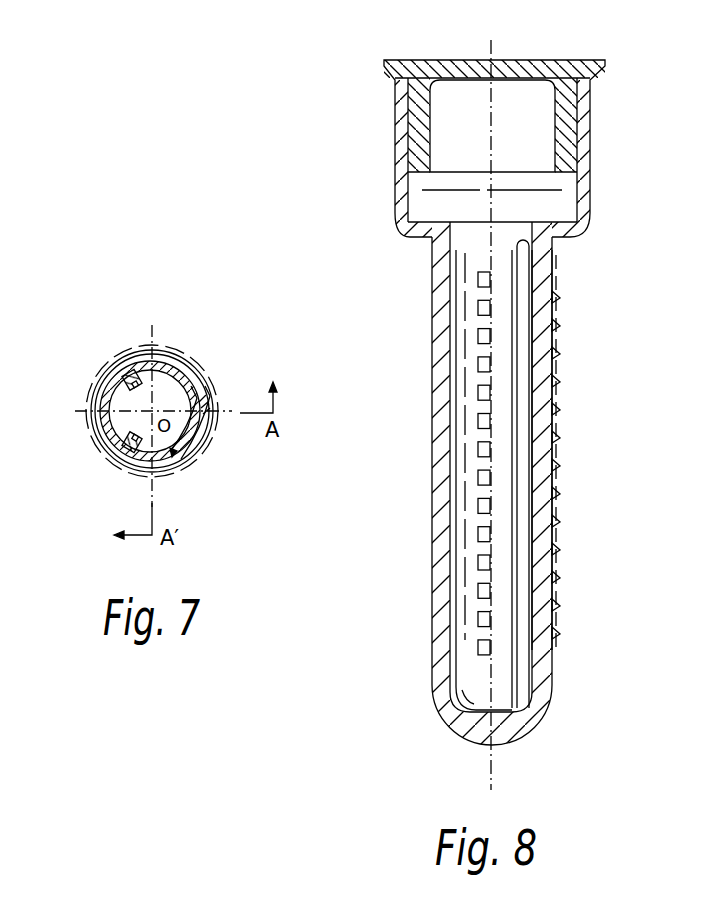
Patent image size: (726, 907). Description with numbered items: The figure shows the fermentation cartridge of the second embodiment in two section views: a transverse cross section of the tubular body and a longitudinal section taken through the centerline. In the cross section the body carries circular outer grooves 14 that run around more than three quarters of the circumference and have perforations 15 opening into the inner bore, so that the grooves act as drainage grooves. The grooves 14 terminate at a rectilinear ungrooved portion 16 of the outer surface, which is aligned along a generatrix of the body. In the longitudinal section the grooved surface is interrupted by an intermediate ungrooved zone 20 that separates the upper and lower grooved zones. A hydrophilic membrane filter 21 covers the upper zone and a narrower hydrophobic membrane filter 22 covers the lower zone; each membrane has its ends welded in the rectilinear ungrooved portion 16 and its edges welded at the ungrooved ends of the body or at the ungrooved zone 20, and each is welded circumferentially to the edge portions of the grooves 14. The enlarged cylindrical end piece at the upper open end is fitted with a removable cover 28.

In FIG. 7, the outer grooves 14 is at (193, 372).
In FIG. 7, the perforations 15 is at (157, 367).
In FIG. 7, the rectilinear ungrooved portion 16 is at (210, 407).
In FIG. 8, the rectilinear ungrooved portion 16 is at (438, 503).
In FIG. 8, the intermediate ungrooved zone 20 is at (550, 562).
In FIG. 8, the hydrophilic membrane filter 21 is at (556, 393).
In FIG. 7, the hydrophobic membrane filter 22 is at (115, 357).
In FIG. 8, the hydrophobic membrane filter 22 is at (557, 632).
In FIG. 8, the removable cover 28 is at (527, 62).